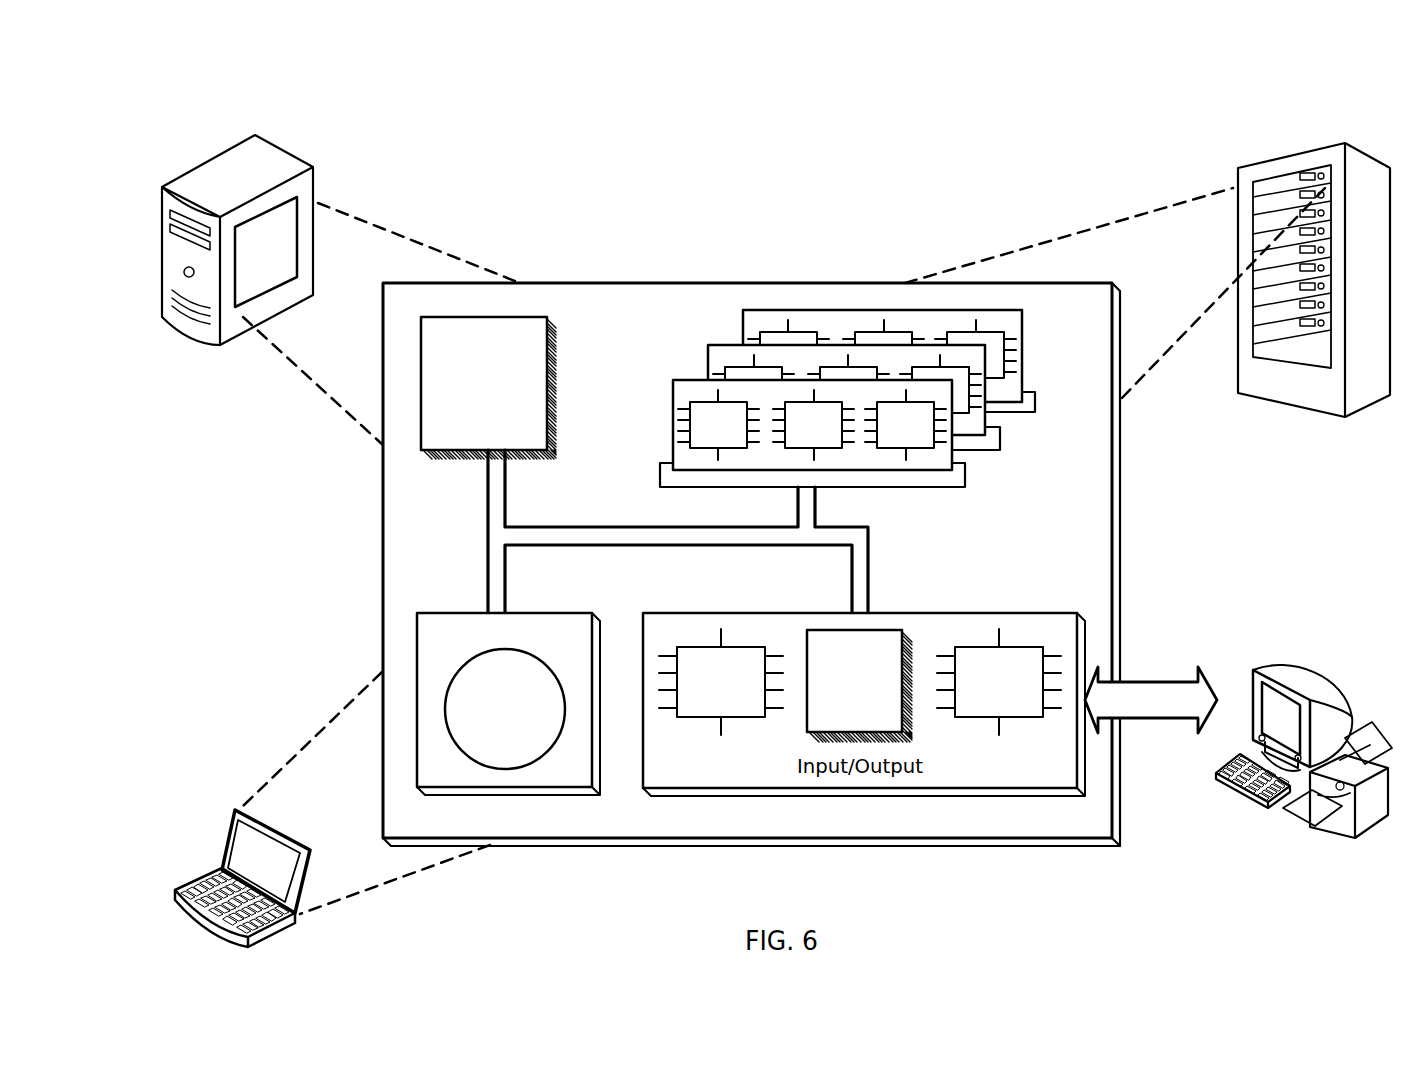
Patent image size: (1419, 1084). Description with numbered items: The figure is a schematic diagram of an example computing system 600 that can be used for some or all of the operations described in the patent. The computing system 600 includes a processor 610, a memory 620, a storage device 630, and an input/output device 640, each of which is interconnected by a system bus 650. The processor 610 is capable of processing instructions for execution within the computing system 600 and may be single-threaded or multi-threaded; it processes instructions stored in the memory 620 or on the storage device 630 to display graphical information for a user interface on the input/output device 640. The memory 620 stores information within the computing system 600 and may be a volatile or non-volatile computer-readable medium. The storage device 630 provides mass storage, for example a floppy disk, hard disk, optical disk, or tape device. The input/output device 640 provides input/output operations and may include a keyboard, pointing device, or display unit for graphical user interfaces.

The computing system 600 is at (161, 104).
The processor 610 is at (530, 440).
The memory 620 is at (1032, 453).
The storage device 630 is at (582, 778).
The input/output device 640 is at (1256, 669).
The system bus 650 is at (675, 546).